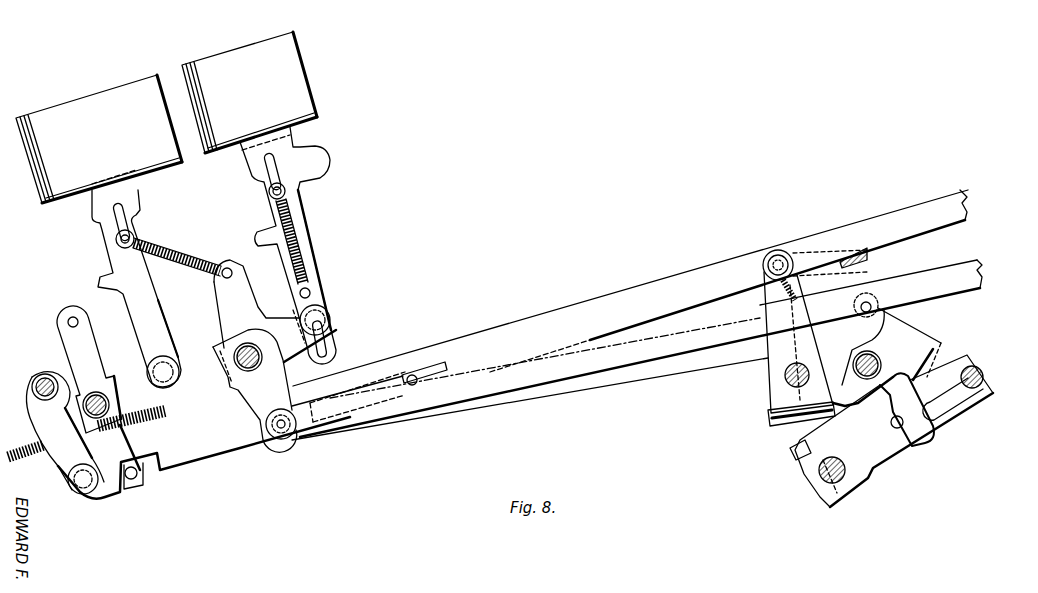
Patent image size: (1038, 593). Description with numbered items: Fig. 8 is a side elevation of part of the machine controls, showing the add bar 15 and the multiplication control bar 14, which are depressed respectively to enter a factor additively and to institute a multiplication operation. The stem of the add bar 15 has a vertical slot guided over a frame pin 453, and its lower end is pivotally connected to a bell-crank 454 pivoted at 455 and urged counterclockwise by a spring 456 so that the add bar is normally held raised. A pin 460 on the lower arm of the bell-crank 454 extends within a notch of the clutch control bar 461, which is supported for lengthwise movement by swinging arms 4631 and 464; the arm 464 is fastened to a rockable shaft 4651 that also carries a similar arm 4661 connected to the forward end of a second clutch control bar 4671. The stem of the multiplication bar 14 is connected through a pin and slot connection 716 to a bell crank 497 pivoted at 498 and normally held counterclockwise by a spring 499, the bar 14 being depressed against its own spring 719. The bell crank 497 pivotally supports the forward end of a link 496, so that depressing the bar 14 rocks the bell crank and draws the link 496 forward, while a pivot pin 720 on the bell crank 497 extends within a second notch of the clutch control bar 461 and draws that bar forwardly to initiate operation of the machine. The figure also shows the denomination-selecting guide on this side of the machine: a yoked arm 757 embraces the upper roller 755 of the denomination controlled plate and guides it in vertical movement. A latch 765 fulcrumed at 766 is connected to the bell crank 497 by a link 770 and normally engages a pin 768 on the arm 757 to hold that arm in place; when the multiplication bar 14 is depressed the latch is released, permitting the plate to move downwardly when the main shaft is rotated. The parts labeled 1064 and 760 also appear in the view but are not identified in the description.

The multiplication control bar 14 is at (270, 38).
The add bar 15 is at (124, 95).
The pedal bracket 1064 is at (306, 152).
The frame pin 453 is at (132, 236).
The spring 499 is at (210, 277).
The spring 719 is at (292, 263).
The pin and slot connection 716 is at (336, 342).
The pivot 455 is at (105, 385).
The bell-crank 454 is at (168, 403).
The spring 456 is at (170, 410).
The pivot 498 is at (255, 390).
The bell crank 497 is at (231, 446).
The pivot pin 720 is at (283, 440).
The pin 460 is at (139, 481).
The swinging arm 4631 is at (62, 473).
The clutch control bar 461 is at (548, 296).
The link 770 is at (693, 374).
The arm 4661 is at (789, 272).
The second clutch control bar 4671 is at (887, 216).
The link 496 is at (958, 263).
The swinging arm 464 is at (756, 376).
The rockable shaft 4651 is at (768, 406).
The latch 765 is at (940, 343).
The fulcrum 766 is at (866, 400).
The rollers 755 is at (984, 377).
The yoked arm 757 is at (887, 458).
The pin 768 is at (926, 421).
The bolt 760 is at (823, 474).